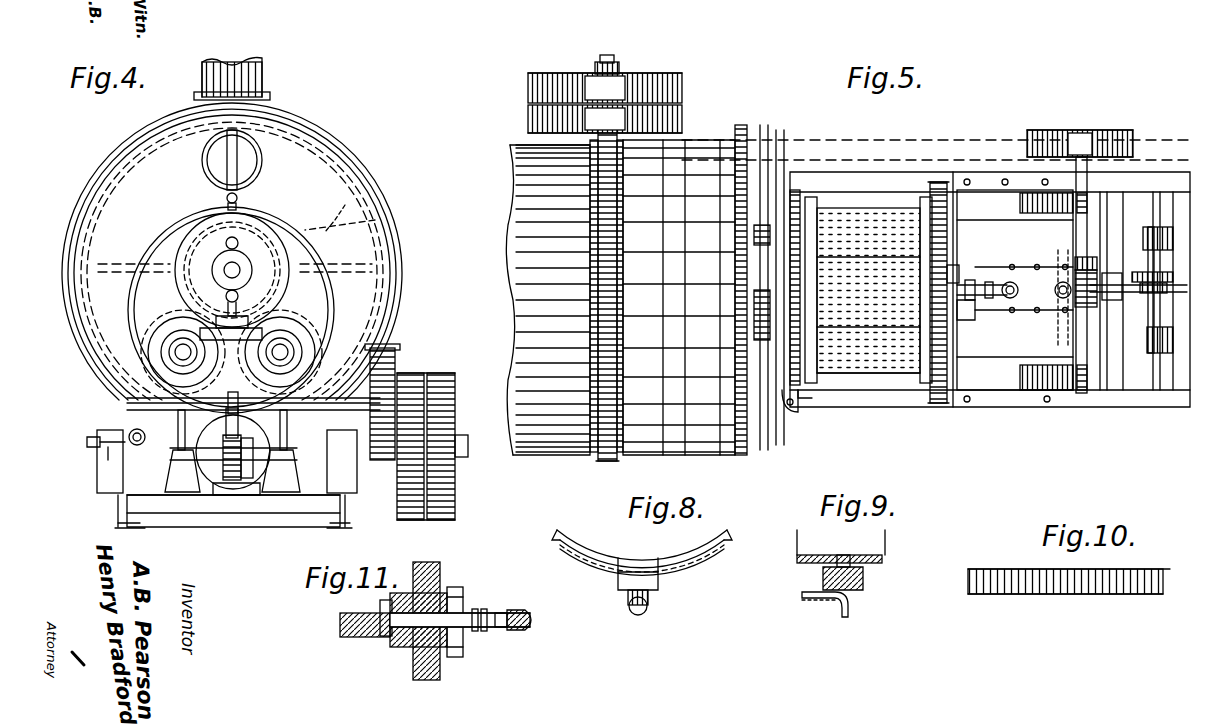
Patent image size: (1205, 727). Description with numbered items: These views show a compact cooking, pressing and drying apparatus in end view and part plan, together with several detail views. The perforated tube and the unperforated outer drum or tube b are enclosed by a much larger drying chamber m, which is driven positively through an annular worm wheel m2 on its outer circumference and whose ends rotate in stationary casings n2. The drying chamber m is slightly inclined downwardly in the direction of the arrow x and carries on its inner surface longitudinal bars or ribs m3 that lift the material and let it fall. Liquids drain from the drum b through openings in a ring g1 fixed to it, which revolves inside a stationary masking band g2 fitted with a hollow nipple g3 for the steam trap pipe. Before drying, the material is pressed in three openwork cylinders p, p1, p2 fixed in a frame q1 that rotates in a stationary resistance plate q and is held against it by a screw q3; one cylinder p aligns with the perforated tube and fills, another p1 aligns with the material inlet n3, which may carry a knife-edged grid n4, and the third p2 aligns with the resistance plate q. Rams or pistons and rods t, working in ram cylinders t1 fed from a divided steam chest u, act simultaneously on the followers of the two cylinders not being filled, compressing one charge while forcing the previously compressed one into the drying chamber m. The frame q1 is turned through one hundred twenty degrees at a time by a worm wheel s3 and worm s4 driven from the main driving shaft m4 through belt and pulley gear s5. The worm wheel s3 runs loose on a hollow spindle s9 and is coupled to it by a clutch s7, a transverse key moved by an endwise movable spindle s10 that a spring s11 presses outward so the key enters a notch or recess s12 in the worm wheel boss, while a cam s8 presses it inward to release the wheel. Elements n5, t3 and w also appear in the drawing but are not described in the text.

In FIG. 4, the cap on top of cylinder n5 is at (262, 75).
In FIG. 4, the bars or ribs m3 is at (104, 170).
In FIG. 4, the perforated cylinder p is at (268, 235).
In FIG. 5, the perforated cylinder p is at (868, 290).
In FIG. 4, the perforated cylinder p1 is at (322, 315).
In FIG. 5, the perforated cylinder p1 is at (858, 212).
In FIG. 4, the perforated cylinder p2 is at (138, 330).
In FIG. 5, the perforated cylinder p2 is at (876, 360).
In FIG. 4, the bracket t3 is at (95, 432).
In FIG. 4, the worm s4 is at (240, 405).
In FIG. 5, the worm s4 is at (1092, 308).
In FIG. 4, the worm wheel s3 is at (233, 502).
In FIG. 11, the worm wheel s3 is at (440, 573).
In FIG. 4, the belt and pulley gear s5 is at (395, 350).
In FIG. 5, the belt and pulley gear s5 is at (1042, 135).
In FIG. 4, the main driving shaft m4 is at (458, 452).
In FIG. 5, the main driving shaft m4 is at (608, 58).
In FIG. 5, the drying chamber m is at (580, 268).
In FIG. 5, the annular worm wheel m2 is at (600, 294).
In FIG. 5, the stationary casings n2 is at (745, 135).
In FIG. 5, the material inlet n3 is at (780, 195).
In FIG. 5, the resistance plate q is at (782, 410).
In FIG. 5, the frame q1 is at (806, 405).
In FIG. 5, the screw q3 is at (992, 282).
In FIG. 5, the rams or pistons and rods t is at (954, 225).
In FIG. 5, the ram cylinders t1 is at (1042, 291).
In FIG. 5, the divided steam chest u is at (1024, 297).
In FIG. 5, the arrow x is at (966, 323).
In FIG. 5, the shaft w is at (1160, 315).
In FIG. 5, the cam s8 is at (1142, 300).
In FIG. 5, the notch or recess s12 is at (1155, 262).
In FIG. 11, the notch or recess s12 is at (400, 593).
In FIG. 8, the outer drum or tube b is at (622, 568).
In FIG. 9, the outer drum or tube b is at (885, 550).
In FIG. 8, the ring g1 is at (672, 570).
In FIG. 9, the ring g1 is at (882, 564).
In FIG. 8, the masking band g2 is at (695, 552).
In FIG. 9, the masking band g2 is at (823, 573).
In FIG. 8, the hollow nipple g3 is at (618, 592).
In FIG. 9, the hollow nipple g3 is at (850, 605).
In FIG. 10, the grid n4 is at (1130, 569).
In FIG. 11, the clutch s7 is at (385, 612).
In FIG. 11, the hollow spindle s9 is at (340, 622).
In FIG. 11, the endwise movable spindle s10 is at (500, 630).
In FIG. 11, the spring s11 is at (365, 640).